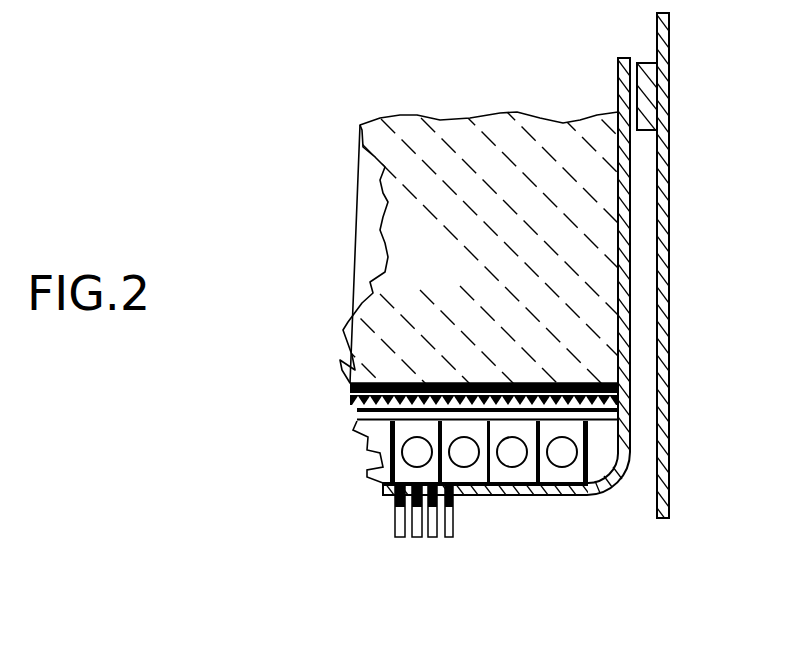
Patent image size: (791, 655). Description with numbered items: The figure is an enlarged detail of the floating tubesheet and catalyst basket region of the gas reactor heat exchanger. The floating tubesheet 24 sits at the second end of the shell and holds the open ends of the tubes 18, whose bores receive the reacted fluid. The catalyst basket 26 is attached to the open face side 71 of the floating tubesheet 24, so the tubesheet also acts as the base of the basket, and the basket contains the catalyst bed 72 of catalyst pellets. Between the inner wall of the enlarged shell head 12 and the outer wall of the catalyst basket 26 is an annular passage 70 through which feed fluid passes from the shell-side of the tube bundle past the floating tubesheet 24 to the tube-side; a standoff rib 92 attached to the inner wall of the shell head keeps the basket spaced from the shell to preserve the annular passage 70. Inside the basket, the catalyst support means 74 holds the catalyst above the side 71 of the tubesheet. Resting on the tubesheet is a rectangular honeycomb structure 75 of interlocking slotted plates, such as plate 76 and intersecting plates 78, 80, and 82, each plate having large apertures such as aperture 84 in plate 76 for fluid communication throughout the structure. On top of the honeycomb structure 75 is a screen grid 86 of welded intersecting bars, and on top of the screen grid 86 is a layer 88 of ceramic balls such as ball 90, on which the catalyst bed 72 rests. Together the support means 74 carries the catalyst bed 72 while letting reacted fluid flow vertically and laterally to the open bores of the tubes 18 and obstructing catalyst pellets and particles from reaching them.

The enlarged shell head 12 is at (669, 31).
The standoff rib 92 is at (652, 114).
The catalyst basket 26 is at (631, 222).
The annular passage 70 is at (641, 323).
The catalyst bed 72 is at (517, 265).
The ceramic ball 90 is at (356, 370).
The layer of ceramic balls 88 is at (343, 386).
The screen grid 86 is at (352, 397).
The open face side of the floating tubesheet 71 is at (388, 458).
The catalyst support means 74 is at (633, 383).
The intersecting plate 80 is at (492, 466).
The intersecting plate 78 is at (563, 455).
The plate 76 is at (523, 470).
The floating tubesheet 24 is at (554, 494).
The aperture 84 is at (597, 491).
The honeycomb structure 75 is at (483, 495).
The intersecting plate 82 is at (455, 485).
The tubes 18 is at (396, 517).